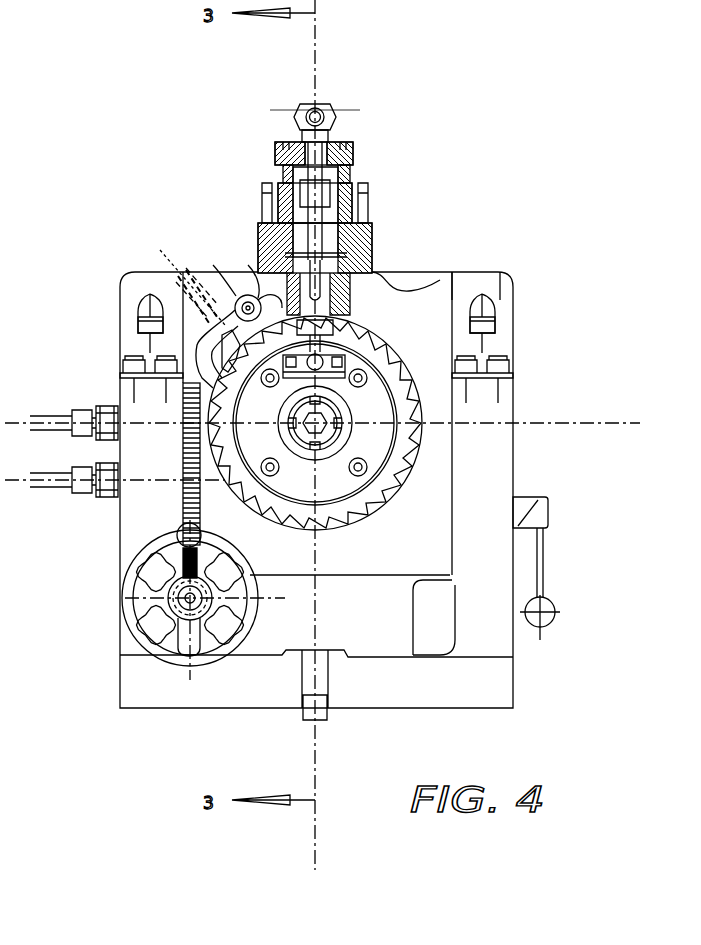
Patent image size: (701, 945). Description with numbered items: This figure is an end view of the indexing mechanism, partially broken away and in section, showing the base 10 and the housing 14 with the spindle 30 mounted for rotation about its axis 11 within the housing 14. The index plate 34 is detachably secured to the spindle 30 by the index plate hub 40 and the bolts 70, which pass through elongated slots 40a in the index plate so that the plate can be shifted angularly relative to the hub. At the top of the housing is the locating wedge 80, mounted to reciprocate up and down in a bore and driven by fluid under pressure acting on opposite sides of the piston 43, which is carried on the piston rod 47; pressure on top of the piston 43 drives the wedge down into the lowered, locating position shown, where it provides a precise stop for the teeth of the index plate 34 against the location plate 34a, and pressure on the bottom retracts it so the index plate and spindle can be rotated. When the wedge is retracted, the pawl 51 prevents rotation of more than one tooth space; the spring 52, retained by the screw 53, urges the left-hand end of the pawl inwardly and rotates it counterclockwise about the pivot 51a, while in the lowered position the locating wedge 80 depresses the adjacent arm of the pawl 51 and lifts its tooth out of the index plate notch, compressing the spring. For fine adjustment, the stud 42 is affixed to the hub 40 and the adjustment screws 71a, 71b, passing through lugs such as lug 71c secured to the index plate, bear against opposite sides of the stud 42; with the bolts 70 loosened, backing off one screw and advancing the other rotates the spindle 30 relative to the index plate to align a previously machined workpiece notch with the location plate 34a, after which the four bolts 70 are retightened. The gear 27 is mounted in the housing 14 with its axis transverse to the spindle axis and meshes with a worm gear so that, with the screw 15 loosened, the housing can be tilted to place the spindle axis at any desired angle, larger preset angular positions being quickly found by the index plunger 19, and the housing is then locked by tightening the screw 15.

The base 10 is at (122, 280).
The axis 11 is at (470, 400).
The housing 14 is at (262, 222).
The screw 15 is at (138, 325).
The index plunger 19 is at (548, 500).
The gear 27 is at (182, 487).
The spindle 30 is at (345, 435).
The index plate 34 is at (345, 325).
The location plate 34a is at (320, 74).
The index plate hub 40 is at (420, 415).
The elongated slots 40a is at (185, 412).
The stud 42 is at (445, 280).
The piston 43 is at (372, 210).
The piston rod 47 is at (355, 232).
The pawl 51 is at (247, 295).
The pivot 51a is at (256, 272).
The spring 52 is at (165, 300).
The screw 53 is at (185, 300).
The bolts 70 is at (183, 392).
The adjustment screw 71a is at (139, 328).
The adjustment screw 71b is at (180, 345).
The lug 71c is at (497, 285).
The locating wedge 80 is at (350, 268).